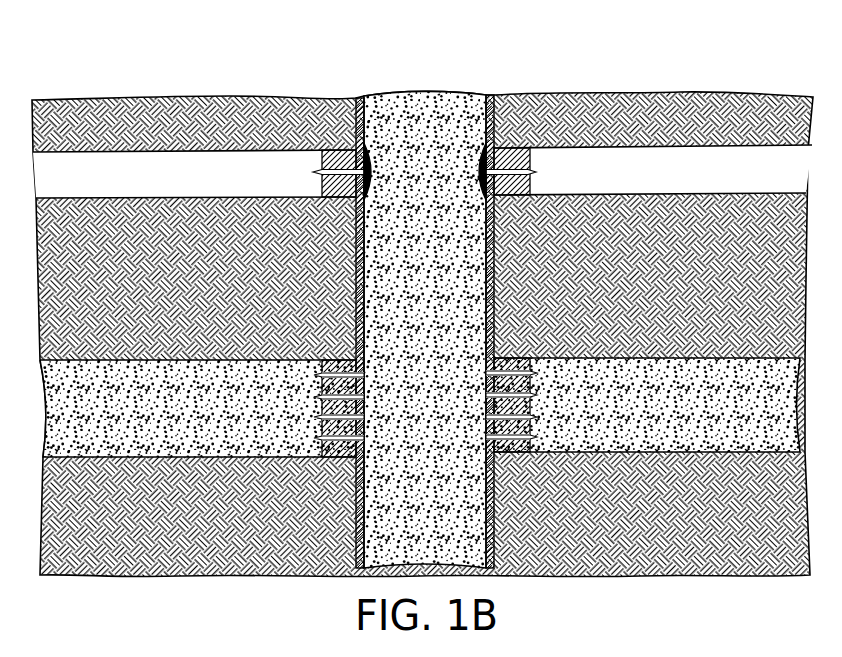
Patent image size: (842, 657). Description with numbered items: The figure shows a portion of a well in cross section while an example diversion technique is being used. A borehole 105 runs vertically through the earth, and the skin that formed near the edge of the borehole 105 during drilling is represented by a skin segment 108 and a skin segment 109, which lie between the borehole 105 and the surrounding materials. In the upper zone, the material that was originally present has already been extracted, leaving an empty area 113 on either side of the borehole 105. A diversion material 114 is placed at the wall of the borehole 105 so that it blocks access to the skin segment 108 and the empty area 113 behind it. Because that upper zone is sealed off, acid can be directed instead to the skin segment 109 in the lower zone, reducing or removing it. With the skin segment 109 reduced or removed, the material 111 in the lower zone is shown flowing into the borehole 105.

The borehole 105 is at (416, 106).
The skin segment 108 is at (514, 150).
The skin segment 109 is at (334, 362).
The material 111 is at (655, 428).
The empty area 113 is at (213, 166).
The diversion material 114 is at (373, 180).